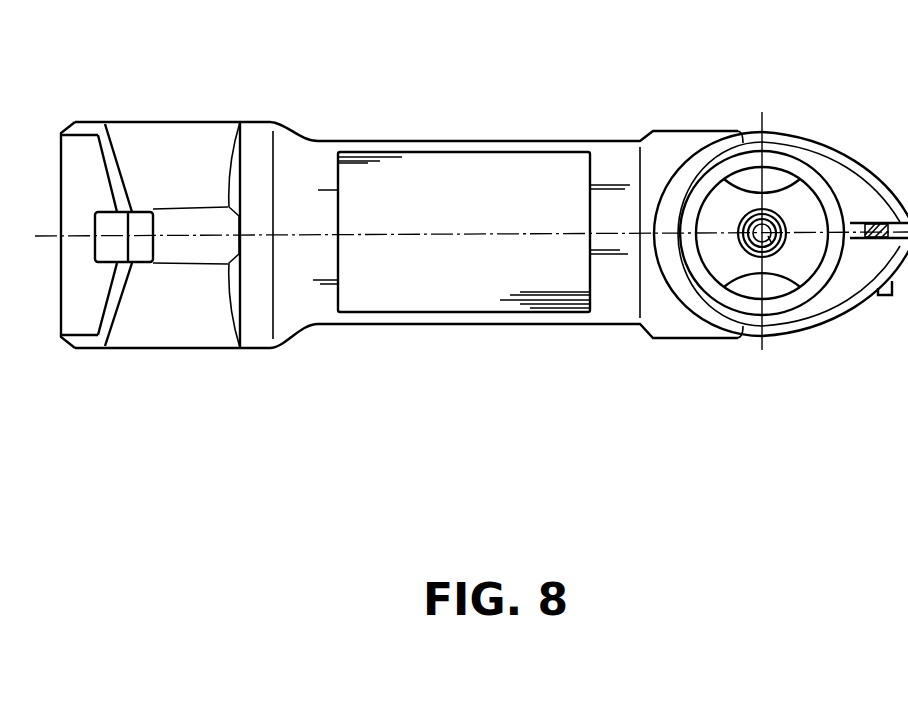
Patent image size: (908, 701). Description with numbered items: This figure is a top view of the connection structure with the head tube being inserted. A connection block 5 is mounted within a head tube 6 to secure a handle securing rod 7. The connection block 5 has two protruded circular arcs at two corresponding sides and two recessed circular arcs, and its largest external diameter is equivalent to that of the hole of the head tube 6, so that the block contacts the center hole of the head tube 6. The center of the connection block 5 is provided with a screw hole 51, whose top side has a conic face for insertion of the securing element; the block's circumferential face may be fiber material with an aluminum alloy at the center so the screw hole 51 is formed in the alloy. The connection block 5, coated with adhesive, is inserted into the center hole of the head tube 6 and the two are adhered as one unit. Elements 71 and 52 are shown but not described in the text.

The handle securing rod 7 is at (473, 130).
The head housing 71 is at (698, 143).
The head tube 6 is at (747, 157).
The connection block 5 is at (777, 283).
The screw hole 51 is at (745, 252).
The pin 52 is at (787, 238).